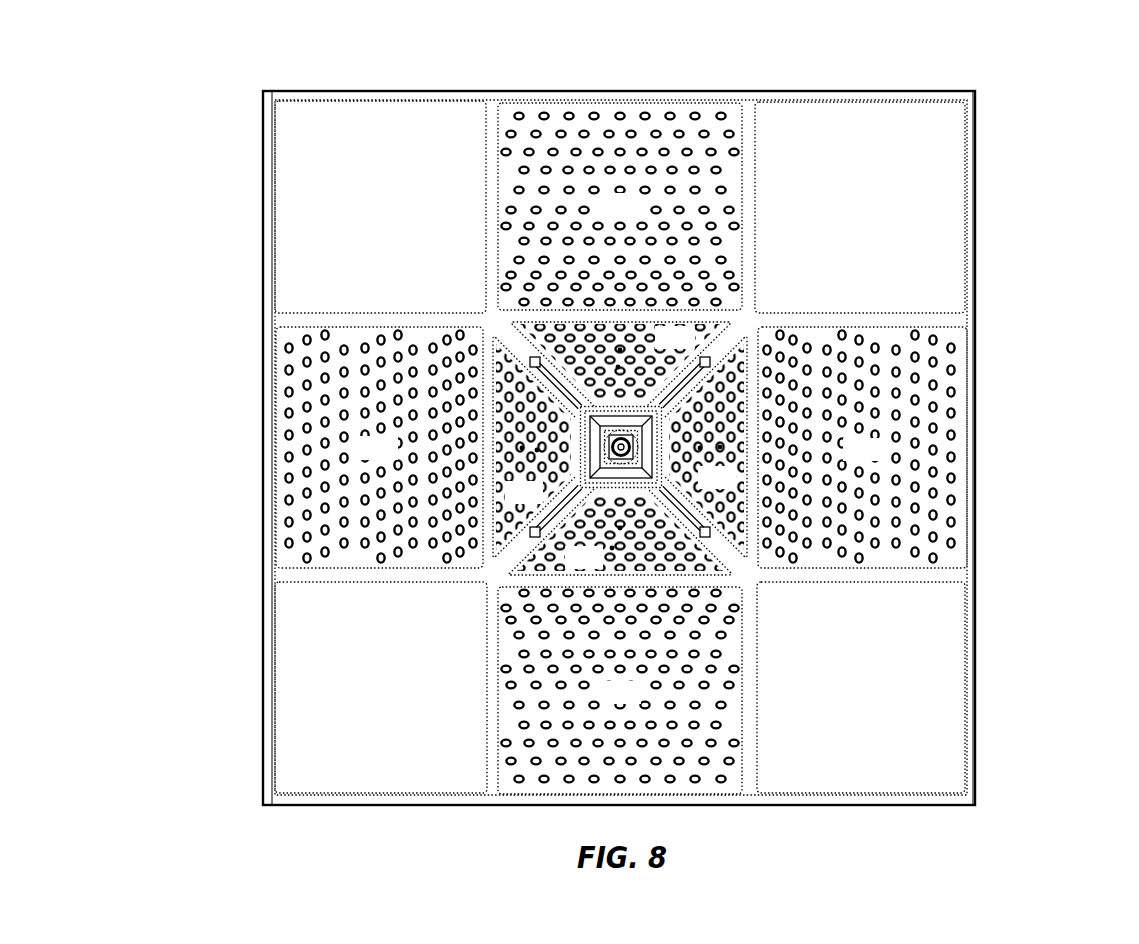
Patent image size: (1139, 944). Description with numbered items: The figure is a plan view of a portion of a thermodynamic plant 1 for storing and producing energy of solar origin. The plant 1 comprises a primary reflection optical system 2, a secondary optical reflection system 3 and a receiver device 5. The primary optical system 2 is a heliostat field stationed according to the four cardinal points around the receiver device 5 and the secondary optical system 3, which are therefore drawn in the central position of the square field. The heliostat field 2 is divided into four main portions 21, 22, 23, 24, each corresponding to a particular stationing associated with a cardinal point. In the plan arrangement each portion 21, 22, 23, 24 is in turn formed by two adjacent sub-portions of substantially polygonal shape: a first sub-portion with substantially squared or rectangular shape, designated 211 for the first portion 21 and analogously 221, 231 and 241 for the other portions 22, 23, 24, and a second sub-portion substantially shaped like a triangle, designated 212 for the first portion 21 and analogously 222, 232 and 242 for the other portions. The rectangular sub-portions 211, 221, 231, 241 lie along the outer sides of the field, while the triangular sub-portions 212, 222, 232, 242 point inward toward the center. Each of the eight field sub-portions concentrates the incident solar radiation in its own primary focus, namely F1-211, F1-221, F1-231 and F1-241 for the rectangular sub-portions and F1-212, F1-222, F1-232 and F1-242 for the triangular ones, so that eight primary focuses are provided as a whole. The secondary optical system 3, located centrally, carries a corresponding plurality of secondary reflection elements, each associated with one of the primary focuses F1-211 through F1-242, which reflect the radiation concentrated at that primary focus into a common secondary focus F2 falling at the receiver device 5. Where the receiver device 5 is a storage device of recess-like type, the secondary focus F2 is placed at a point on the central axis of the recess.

The plant 1 is at (1054, 351).
The primary reflection optical system 2 is at (962, 522).
The secondary optical reflection system 3 is at (572, 424).
The receiver device 5 is at (705, 575).
The secondary focus F2 is at (622, 450).
The first portion of the heliostat field 21 is at (808, 319).
The second portion of the heliostat field 22 is at (750, 600).
The third portion of the heliostat field 23 is at (434, 577).
The fourth portion of the heliostat field 24 is at (493, 294).
The squared or rectangular portion of the heliostat field 211 is at (880, 460).
The triangular portion of the heliostat field 212 is at (733, 488).
The squared or rectangular portion of the heliostat field 221 is at (638, 704).
The triangular portion of the heliostat field 222 is at (600, 568).
The squared or rectangular portion of the heliostat field 231 is at (395, 458).
The triangular portion of the heliostat field 232 is at (540, 504).
The squared or rectangular portion of the heliostat field 241 is at (637, 216).
The triangular portion of the heliostat field 242 is at (692, 348).
The primary focus F1-211 is at (522, 448).
The primary focus F1-212 is at (537, 450).
The primary focus F1-221 is at (620, 350).
The primary focus F1-222 is at (618, 367).
The primary focus F1-231 is at (720, 447).
The primary focus F1-232 is at (700, 448).
The primary focus F1-241 is at (612, 548).
The primary focus F1-242 is at (620, 528).